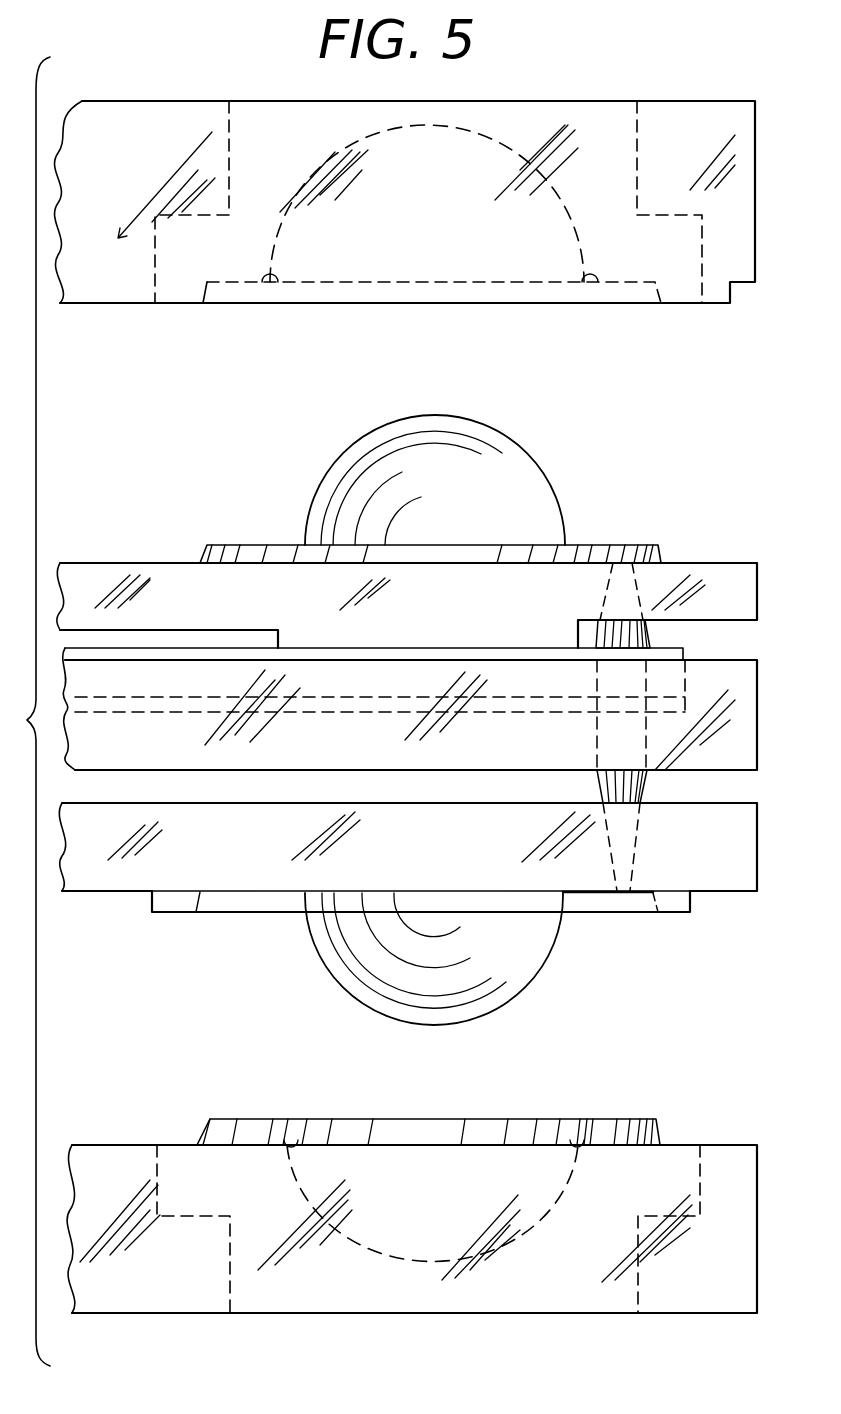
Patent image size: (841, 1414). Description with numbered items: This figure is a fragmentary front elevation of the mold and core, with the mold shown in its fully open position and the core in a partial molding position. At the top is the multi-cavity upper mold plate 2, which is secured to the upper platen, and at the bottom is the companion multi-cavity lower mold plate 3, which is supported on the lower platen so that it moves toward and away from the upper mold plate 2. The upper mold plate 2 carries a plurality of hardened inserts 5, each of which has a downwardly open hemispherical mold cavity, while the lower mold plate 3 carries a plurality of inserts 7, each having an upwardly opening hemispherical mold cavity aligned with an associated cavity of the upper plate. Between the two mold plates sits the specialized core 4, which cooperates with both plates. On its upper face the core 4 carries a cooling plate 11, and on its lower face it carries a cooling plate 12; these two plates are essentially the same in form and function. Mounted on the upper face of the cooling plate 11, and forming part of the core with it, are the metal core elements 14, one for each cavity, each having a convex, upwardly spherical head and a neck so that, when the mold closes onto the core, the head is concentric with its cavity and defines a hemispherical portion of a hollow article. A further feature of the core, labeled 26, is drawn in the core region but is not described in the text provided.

The upper mold plate 2 is at (714, 300).
The hardened inserts 5 is at (150, 284).
The core elements 14 is at (518, 448).
The cooling plate 11 is at (741, 548).
The core 4 is at (745, 650).
The channel in intermediate panel 26 is at (740, 732).
The cooling plate 12 is at (718, 893).
The lower mold plate 3 is at (725, 1153).
The inserts 7 is at (157, 1152).